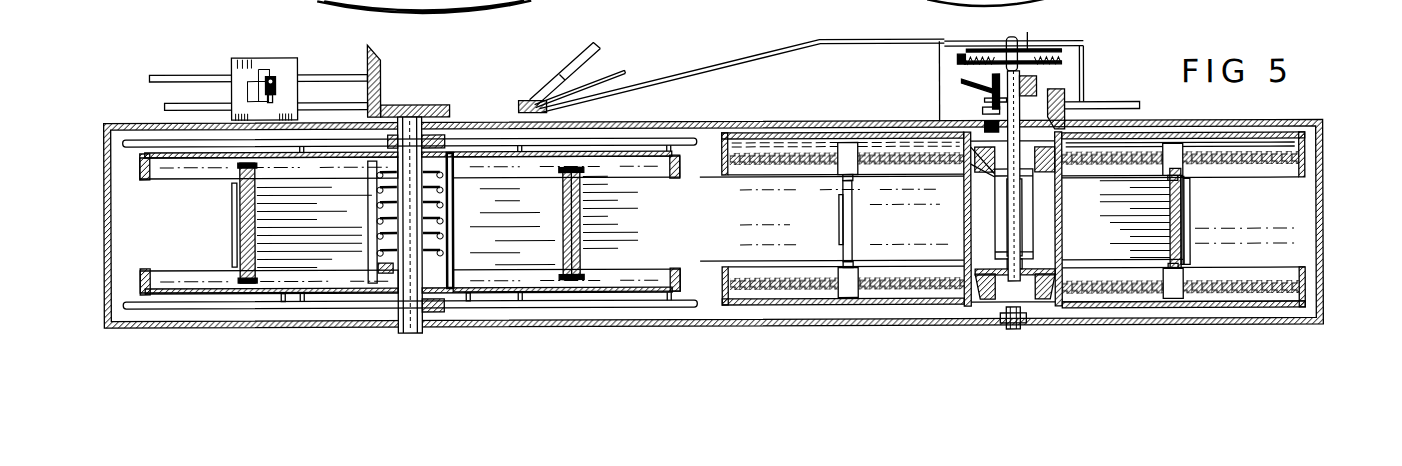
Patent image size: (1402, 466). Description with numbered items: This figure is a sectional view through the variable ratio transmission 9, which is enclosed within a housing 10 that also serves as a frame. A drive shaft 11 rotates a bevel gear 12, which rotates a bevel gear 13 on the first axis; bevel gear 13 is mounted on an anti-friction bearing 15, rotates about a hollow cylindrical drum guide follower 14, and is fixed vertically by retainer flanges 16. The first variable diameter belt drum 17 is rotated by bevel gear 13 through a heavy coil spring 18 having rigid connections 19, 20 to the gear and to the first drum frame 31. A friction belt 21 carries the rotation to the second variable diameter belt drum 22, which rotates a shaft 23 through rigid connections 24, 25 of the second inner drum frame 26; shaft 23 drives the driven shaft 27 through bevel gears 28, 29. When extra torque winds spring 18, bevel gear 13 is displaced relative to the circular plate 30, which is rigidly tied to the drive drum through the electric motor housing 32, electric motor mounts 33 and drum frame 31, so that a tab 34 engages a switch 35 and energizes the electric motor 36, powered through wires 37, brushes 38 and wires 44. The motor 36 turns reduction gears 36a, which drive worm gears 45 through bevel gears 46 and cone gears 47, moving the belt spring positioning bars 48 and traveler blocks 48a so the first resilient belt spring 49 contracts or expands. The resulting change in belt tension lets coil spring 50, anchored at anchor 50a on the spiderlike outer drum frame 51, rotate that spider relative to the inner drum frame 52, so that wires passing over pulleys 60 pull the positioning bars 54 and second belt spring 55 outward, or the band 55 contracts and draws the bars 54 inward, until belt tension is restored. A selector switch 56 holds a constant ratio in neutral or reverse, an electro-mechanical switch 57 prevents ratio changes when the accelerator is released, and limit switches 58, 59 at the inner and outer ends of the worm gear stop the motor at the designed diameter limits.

The variable ratio transmission 9 is at (1300, 63).
The housing 10 is at (130, 121).
The drive shaft 11 is at (1130, 102).
The bevel gear 12 is at (1085, 93).
The bevel gear 13 is at (962, 88).
The hollow cylindrical drum guide follower 14 is at (985, 101).
The anti-friction bearing 15 is at (1029, 30).
The retainer flanges 16 is at (953, 77).
The first variable diameter belt drum 17 is at (1295, 208).
The heavy coil spring 18 is at (983, 112).
The rigid connection 19 is at (1062, 82).
The rigid connection 20 is at (985, 127).
The friction belt 21 is at (230, 200).
The second variable diameter belt drum 22 is at (188, 272).
The shaft 23 is at (462, 164).
The rigid connection 24 is at (445, 138).
The rigid connection 25 is at (398, 298).
The second inner drum frame 26 is at (282, 292).
The driven shaft 27 is at (213, 73).
The bevel gear 28 is at (404, 104).
The bevel gear 29 is at (385, 60).
The circular plate 30 is at (963, 63).
The first drum frame 31 is at (963, 232).
The electric motor housing 32 is at (1008, 40).
The electric motor mounts 33 is at (1057, 193).
The tab 34 is at (1062, 72).
The switch 35 is at (1060, 62).
The electric motor 36 is at (1058, 215).
The reduction gears 36a is at (1033, 257).
The wires 37 is at (654, 82).
The brushes 38 is at (968, 53).
The wires 44 is at (967, 197).
The worm gears 45 is at (765, 278).
The bevel gears 46 is at (1012, 285).
The cone gears 47 is at (988, 300).
The belt spring positioning bars 48 is at (840, 232).
The traveler blocks 48a is at (847, 143).
The first resilient belt spring 49 is at (840, 210).
The coil spring 50 is at (385, 222).
The anchor 50a is at (378, 265).
The spiderlike outer drum frame 51 is at (617, 137).
The inner drum frame 52 is at (483, 221).
The belt spring positioning bars 54 is at (260, 181).
The second belt spring 55 is at (238, 250).
The selector switch 56 is at (247, 57).
The electro-mechanical switch 57 is at (533, 100).
The limit switch 58 is at (967, 172).
The limit switch 59 is at (725, 134).
The pulleys 60 is at (683, 162).